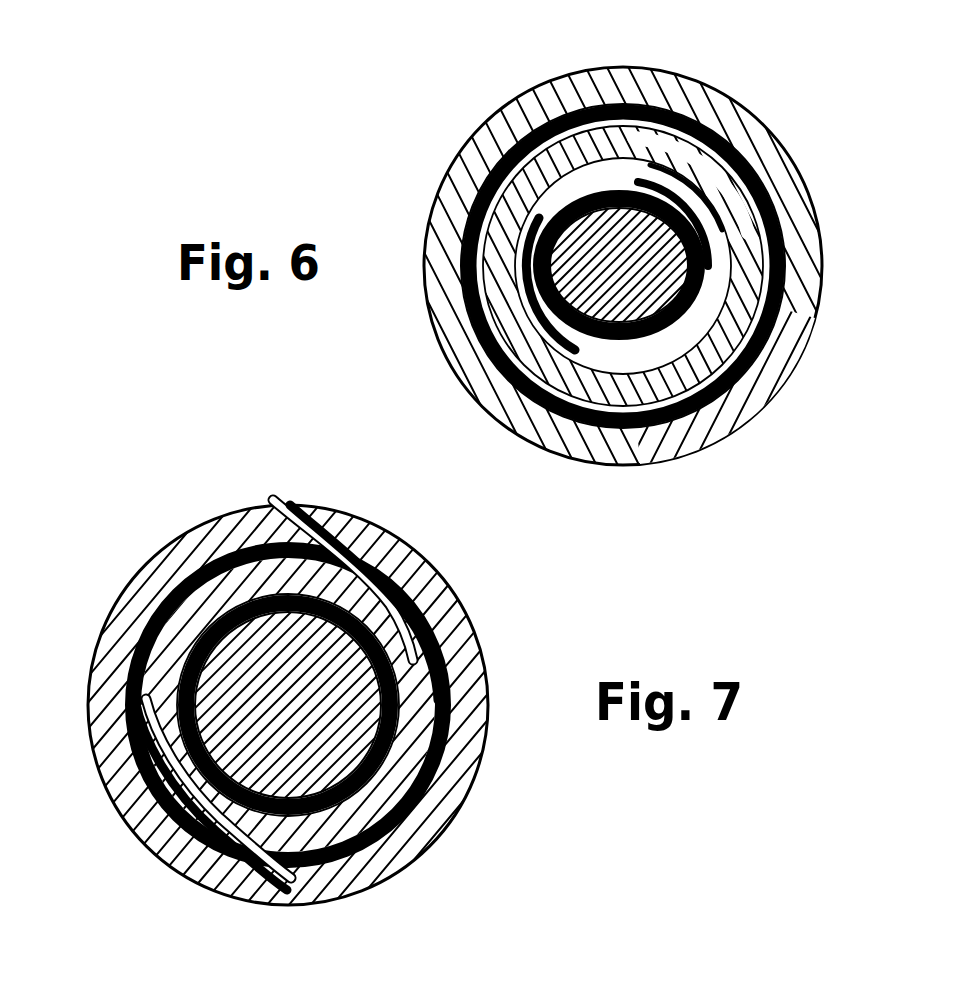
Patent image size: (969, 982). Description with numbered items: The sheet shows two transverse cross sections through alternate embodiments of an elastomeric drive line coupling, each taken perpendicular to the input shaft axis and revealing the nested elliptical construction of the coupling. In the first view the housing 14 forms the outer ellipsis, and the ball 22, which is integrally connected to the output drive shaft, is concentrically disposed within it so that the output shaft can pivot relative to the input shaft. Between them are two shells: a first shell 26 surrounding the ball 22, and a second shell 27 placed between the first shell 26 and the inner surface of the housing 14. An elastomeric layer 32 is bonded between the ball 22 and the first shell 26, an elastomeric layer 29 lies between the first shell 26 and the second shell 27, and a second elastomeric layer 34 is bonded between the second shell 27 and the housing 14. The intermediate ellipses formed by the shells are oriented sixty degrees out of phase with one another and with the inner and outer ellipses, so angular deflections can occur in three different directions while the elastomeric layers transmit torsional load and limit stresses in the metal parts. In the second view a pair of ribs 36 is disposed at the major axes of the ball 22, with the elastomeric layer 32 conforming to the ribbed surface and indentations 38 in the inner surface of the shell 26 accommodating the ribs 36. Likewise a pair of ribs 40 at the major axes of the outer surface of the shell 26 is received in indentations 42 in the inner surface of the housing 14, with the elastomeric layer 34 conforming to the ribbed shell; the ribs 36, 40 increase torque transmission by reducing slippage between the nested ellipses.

In FIG. 6, the housing 14 is at (625, 82).
In FIG. 7, the housing 14 is at (446, 794).
In FIG. 6, the ball 22 is at (586, 243).
In FIG. 7, the ball 22 is at (379, 559).
In FIG. 6, the shell 26 is at (745, 145).
In FIG. 7, the shell 26 is at (169, 831).
In FIG. 6, the second shell 27 is at (737, 364).
In FIG. 6, the elastomeric layer 29 is at (722, 450).
In FIG. 6, the elastomeric layer 32 is at (541, 267).
In FIG. 6, the second elastomeric layer 34 is at (690, 130).
In FIG. 7, the ribs 36 is at (167, 673).
In FIG. 7, the indentations 38 is at (418, 718).
In FIG. 7, the ribs 40 is at (329, 526).
In FIG. 7, the indentations 42 is at (279, 512).